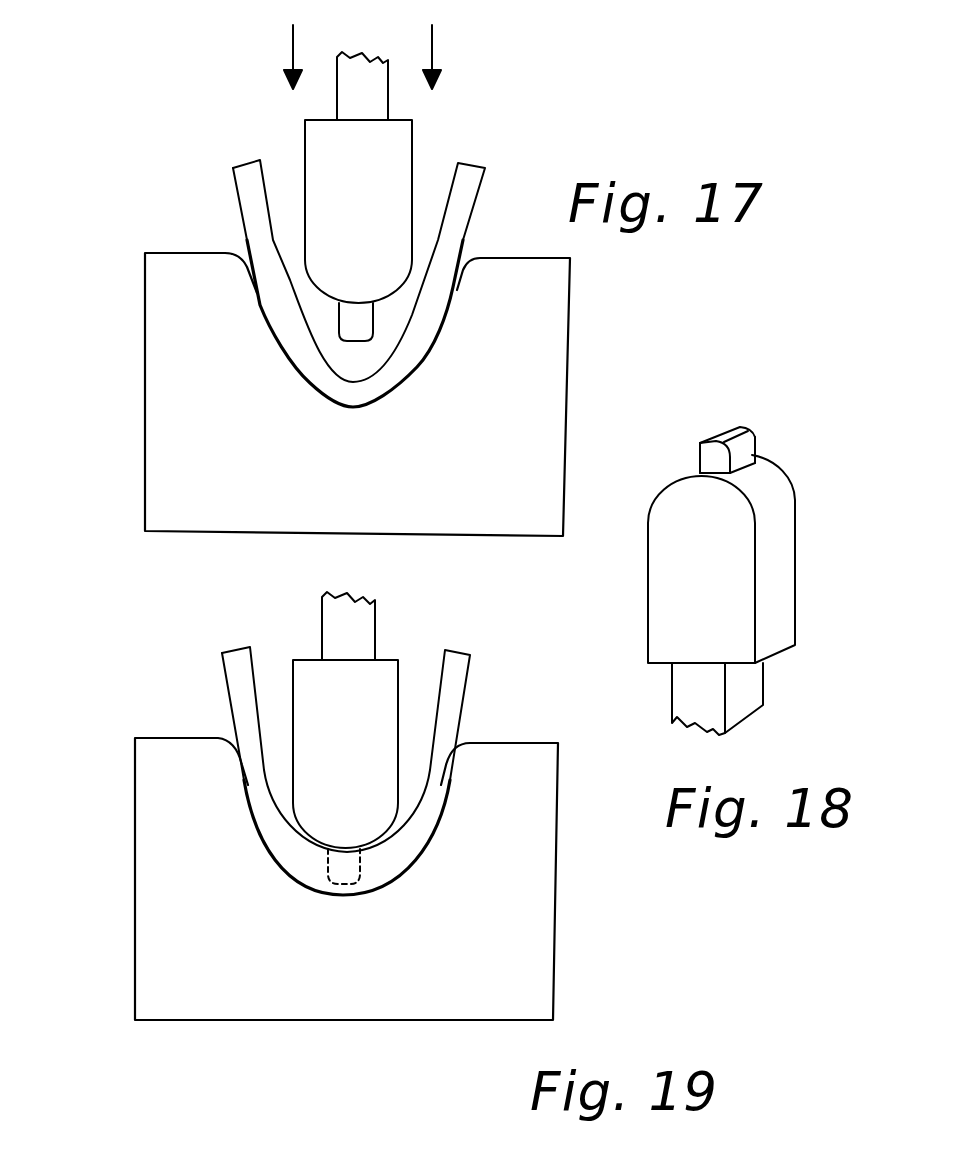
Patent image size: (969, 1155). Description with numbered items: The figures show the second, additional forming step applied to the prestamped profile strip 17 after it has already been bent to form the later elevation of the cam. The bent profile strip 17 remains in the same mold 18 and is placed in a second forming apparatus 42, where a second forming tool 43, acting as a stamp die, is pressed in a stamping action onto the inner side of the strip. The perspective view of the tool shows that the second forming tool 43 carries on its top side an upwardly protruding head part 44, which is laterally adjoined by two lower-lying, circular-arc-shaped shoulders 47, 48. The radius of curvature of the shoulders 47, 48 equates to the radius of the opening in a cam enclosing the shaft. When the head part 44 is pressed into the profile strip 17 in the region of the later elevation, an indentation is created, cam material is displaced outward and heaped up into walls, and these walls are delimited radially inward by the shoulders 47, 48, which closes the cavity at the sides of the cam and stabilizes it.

In FIG. 17, the profile strip 17 is at (248, 182).
In FIG. 19, the profile strip 17 is at (235, 655).
In FIG. 17, the mold 18 is at (247, 470).
In FIG. 19, the mold 18 is at (232, 958).
In FIG. 17, the second forming apparatus 42 is at (116, 528).
In FIG. 19, the second forming apparatus 42 is at (112, 1038).
In FIG. 17, the second forming tool 43 is at (387, 163).
In FIG. 19, the second forming tool 43 is at (363, 693).
In FIG. 18, the second forming tool 43 is at (773, 613).
In FIG. 17, the head part 44 is at (352, 325).
In FIG. 19, the head part 44 is at (338, 867).
In FIG. 18, the head part 44 is at (744, 428).
In FIG. 18, the shoulder 47 is at (698, 471).
In FIG. 18, the shoulder 48 is at (757, 458).